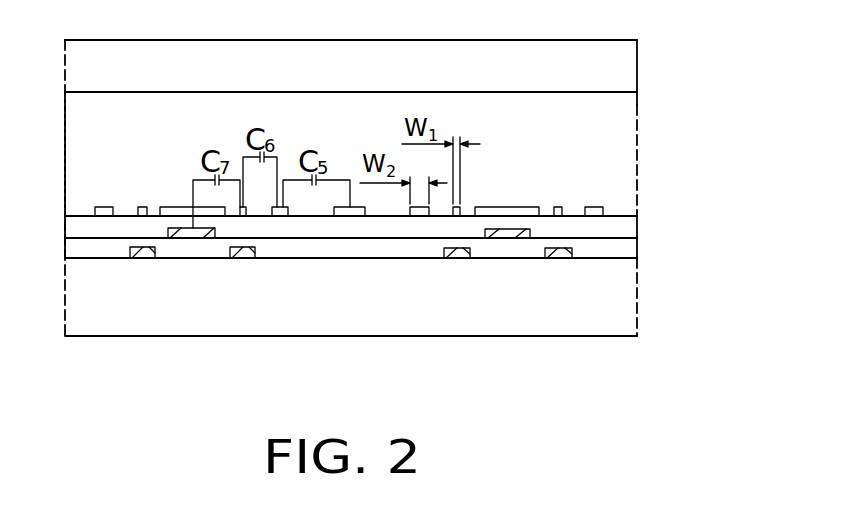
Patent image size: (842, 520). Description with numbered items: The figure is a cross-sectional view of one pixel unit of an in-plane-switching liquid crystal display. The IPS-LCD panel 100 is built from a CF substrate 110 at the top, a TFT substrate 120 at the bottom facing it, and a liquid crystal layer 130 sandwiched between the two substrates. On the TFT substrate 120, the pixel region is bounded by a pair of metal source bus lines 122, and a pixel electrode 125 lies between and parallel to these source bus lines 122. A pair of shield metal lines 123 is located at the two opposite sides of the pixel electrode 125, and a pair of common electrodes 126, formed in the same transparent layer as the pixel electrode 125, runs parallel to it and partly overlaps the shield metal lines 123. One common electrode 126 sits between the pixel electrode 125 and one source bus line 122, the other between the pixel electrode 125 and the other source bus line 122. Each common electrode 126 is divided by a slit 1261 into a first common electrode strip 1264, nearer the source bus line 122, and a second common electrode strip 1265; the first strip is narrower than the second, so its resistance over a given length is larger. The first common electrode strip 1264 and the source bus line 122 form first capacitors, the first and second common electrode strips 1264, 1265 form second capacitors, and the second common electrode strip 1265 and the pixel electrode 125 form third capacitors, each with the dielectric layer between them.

The IPS-LCD panel 100 is at (284, 20).
The CF substrate 110 is at (605, 61).
The TFT substrate 120 is at (645, 203).
The source bus line 122 is at (193, 238).
The shield metal line 123 is at (246, 252).
The pixel electrode 125 is at (350, 213).
The common electrode 126 is at (444, 331).
The liquid crystal layer 130 is at (605, 137).
The slit 1261 is at (575, 213).
The first common electrode strip 1264 is at (243, 213).
The second common electrode strip 1265 is at (416, 316).